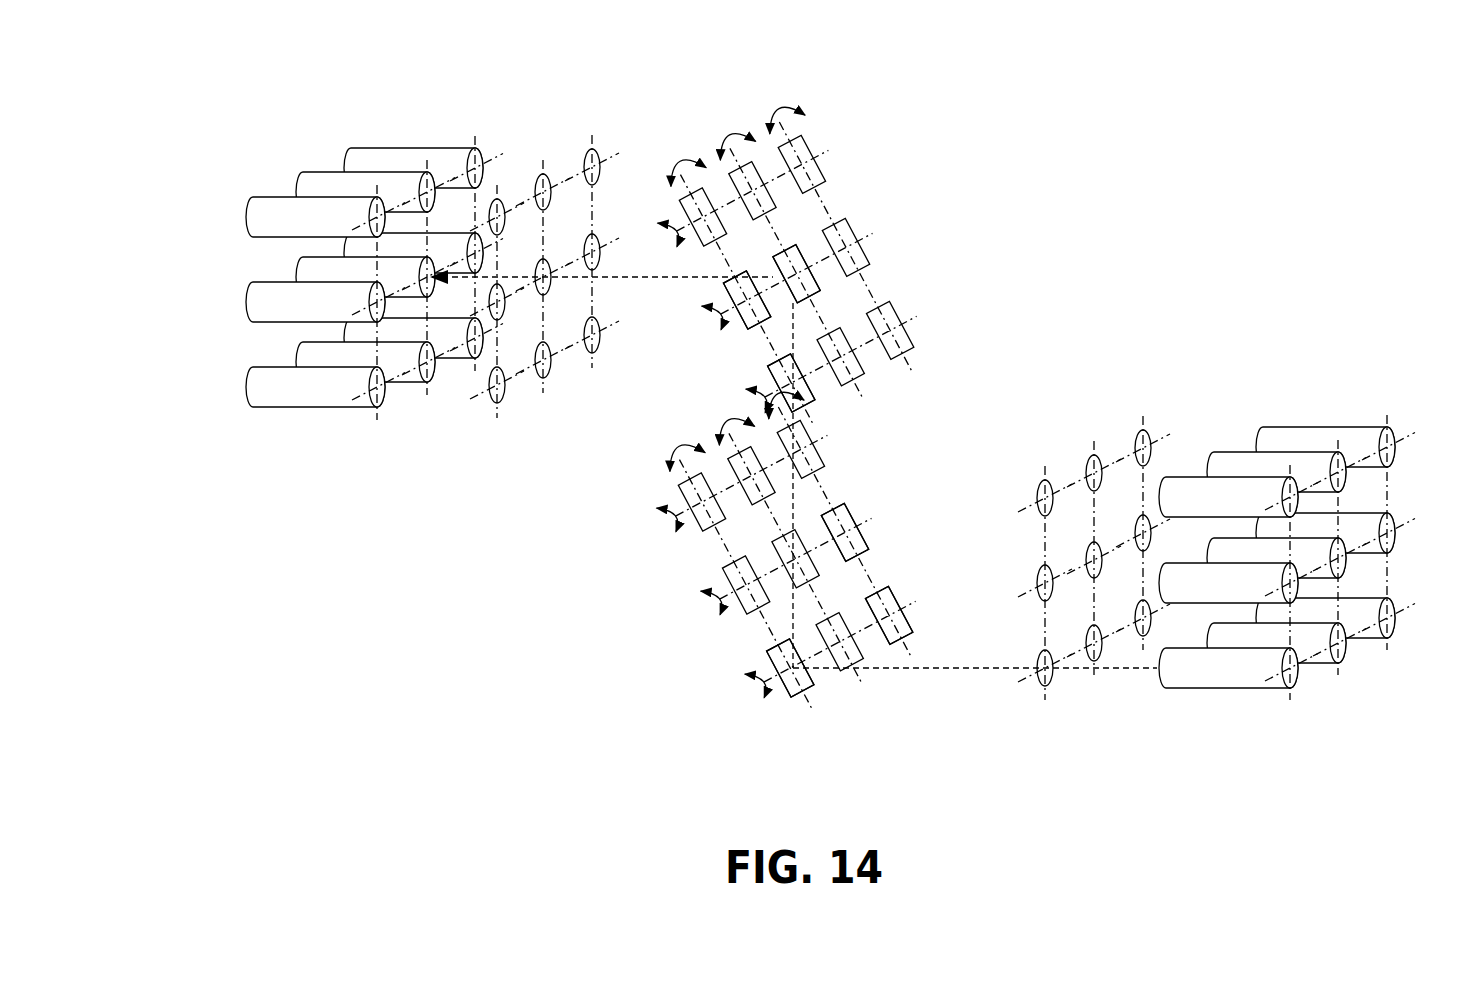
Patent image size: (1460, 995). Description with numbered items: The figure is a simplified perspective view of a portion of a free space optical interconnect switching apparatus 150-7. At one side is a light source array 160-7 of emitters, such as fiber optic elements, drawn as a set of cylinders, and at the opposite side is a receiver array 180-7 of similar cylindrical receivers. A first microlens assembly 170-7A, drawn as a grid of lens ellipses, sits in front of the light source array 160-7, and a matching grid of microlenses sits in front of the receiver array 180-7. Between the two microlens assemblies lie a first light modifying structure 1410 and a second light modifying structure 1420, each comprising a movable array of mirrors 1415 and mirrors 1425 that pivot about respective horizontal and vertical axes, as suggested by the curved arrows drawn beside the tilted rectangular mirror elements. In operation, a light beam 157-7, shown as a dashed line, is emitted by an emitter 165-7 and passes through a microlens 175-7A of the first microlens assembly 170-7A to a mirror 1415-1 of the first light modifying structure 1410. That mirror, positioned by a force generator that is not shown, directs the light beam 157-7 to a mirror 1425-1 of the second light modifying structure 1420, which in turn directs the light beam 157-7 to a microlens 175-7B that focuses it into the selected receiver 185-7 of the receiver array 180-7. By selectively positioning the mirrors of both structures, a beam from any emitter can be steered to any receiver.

The free space optical interconnect switching apparatus 150-7 is at (360, 638).
The receiver array 180-7 is at (310, 231).
The receiver 185-7 is at (312, 272).
The first microlens assembly 170-7A is at (850, 403).
The microlens 175-7B is at (553, 293).
The microlens 175-7A is at (1050, 680).
The second light modifying structure 1420 is at (817, 271).
The mirror 1425-1 is at (817, 290).
The mirrors 1425 is at (750, 372).
The first light modifying structure 1410 is at (786, 580).
The mirrors 1415 is at (903, 600).
The mirror 1415-1 is at (797, 697).
The light beam 157-7 is at (965, 670).
The light source array 160-7 is at (1303, 541).
The emitter 165-7 is at (1228, 678).